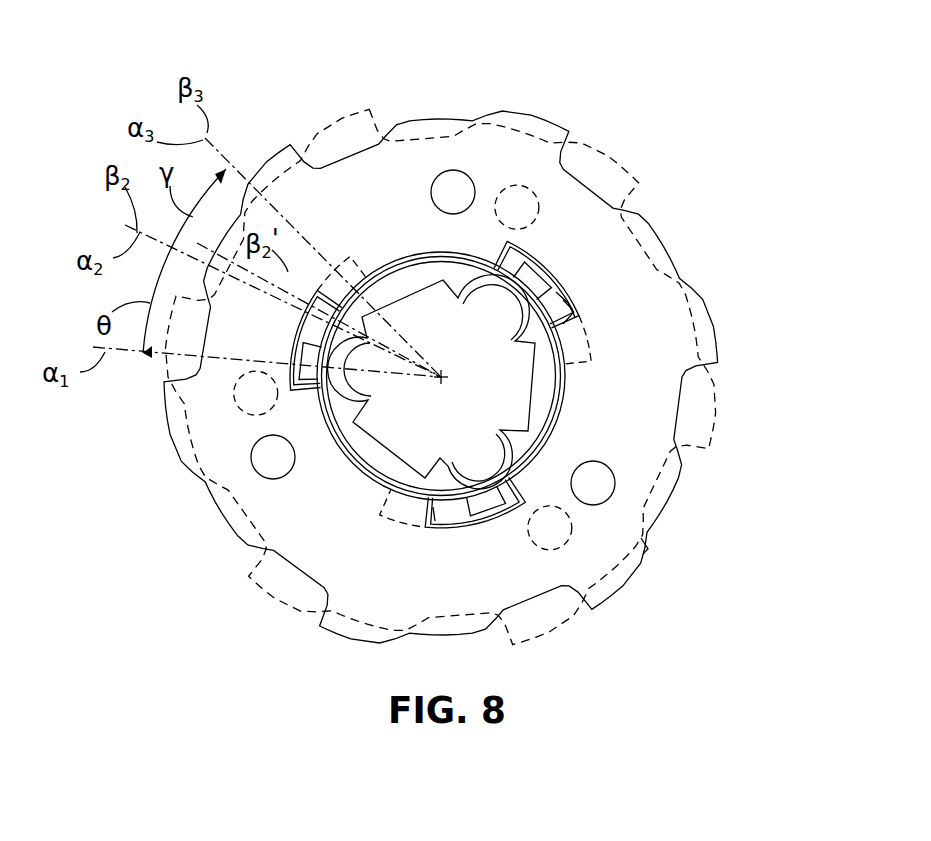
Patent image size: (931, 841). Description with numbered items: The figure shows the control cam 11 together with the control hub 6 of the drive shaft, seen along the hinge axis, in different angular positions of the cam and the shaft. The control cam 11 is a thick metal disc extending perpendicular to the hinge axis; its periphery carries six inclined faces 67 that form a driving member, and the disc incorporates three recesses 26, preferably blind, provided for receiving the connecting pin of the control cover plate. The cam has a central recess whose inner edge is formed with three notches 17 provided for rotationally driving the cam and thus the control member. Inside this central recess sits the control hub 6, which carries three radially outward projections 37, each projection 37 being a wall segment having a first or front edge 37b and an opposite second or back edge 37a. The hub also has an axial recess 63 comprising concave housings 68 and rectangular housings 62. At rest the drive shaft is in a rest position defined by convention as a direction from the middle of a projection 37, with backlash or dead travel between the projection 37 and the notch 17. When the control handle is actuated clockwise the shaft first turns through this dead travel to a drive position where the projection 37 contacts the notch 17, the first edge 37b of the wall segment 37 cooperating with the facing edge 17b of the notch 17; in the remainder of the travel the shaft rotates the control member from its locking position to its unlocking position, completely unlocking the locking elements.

The control cam 11 is at (268, 124).
The recess 26 is at (451, 170).
The projection 37 is at (518, 262).
The notch 17 is at (550, 272).
The first edge 37b is at (560, 289).
The facing edge 17b is at (566, 312).
The control hub 6 is at (584, 394).
The inclined face 67 is at (648, 549).
The concave housing 68 is at (482, 474).
The rectangular housing 62 is at (387, 450).
The axial recess 63 is at (484, 392).
The second edge 37a is at (303, 395).